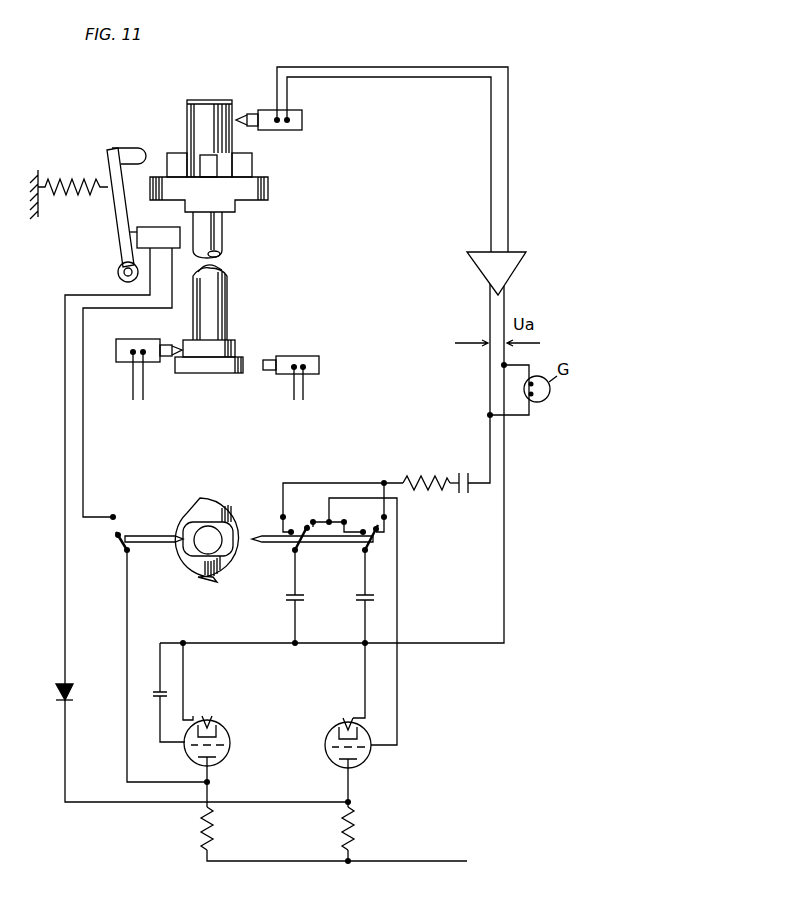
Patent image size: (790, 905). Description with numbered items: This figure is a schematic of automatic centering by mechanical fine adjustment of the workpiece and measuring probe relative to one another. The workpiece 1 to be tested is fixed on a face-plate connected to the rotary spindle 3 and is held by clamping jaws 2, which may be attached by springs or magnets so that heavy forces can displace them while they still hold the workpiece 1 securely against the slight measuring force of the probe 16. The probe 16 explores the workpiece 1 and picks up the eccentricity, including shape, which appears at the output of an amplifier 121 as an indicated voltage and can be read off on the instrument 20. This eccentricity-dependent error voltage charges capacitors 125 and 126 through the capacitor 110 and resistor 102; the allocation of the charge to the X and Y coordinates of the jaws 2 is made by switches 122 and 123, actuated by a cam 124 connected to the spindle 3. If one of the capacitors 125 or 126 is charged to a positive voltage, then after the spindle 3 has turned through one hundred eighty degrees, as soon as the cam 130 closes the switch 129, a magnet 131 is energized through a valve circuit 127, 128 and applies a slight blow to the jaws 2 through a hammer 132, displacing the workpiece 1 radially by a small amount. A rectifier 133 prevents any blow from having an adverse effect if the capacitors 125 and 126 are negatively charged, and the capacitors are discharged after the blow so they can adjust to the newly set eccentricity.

The workpiece 1 is at (187, 110).
The clamping jaws 2 is at (178, 160).
The rotary spindle 3 is at (237, 193).
The probe 16 is at (372, 159).
The instrument 20 is at (551, 389).
The resistor 102 is at (416, 476).
The capacitor 110 is at (462, 475).
The amplifier 121 is at (482, 263).
The switch 122 is at (315, 352).
The switch 123 is at (292, 545).
The cam 124 is at (210, 368).
The capacitor 125 is at (360, 598).
The capacitor 126 is at (289, 598).
The valve circuit 127 is at (337, 756).
The valve circuit 128 is at (223, 751).
The switch 129 is at (125, 355).
The cam 130 is at (235, 350).
The magnet 131 is at (162, 228).
The hammer 132 is at (116, 198).
The rectifier 133 is at (60, 684).